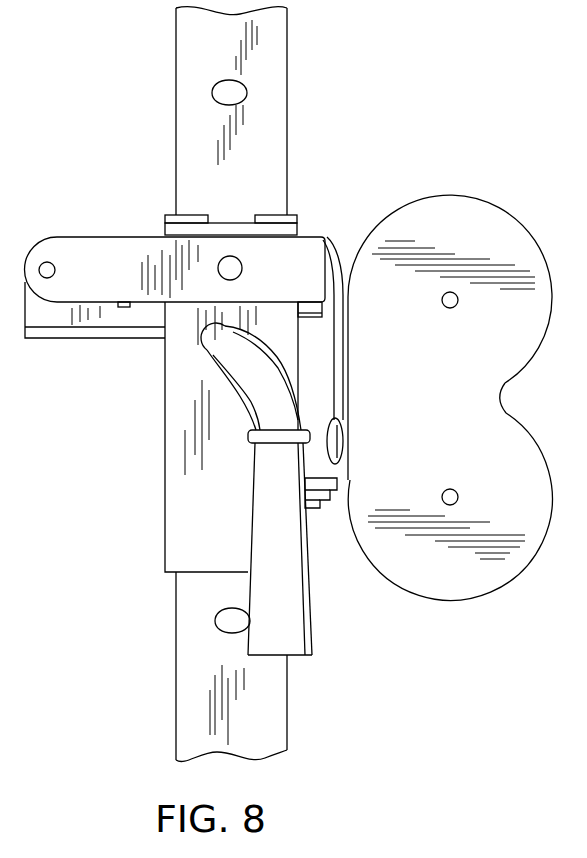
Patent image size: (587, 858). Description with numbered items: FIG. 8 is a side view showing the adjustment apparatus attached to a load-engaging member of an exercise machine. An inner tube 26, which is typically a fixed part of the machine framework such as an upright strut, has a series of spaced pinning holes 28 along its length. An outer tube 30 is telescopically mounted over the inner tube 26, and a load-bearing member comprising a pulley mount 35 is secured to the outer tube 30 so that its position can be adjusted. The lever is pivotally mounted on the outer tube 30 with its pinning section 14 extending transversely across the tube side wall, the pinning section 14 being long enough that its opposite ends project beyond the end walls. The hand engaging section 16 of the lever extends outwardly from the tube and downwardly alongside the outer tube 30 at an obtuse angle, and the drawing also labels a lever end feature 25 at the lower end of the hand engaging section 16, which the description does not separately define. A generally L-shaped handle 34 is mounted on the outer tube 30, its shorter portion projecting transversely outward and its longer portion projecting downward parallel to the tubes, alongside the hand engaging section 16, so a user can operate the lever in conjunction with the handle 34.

The pinning section 14 is at (126, 247).
The hand engaging section 16 is at (333, 364).
The spring end lobe 25 is at (345, 436).
The inner tube 26 is at (277, 113).
The pinning holes 28 is at (213, 90).
The outer tube 30 is at (168, 355).
The handle 34 is at (267, 420).
The pulley mount 35 is at (503, 228).